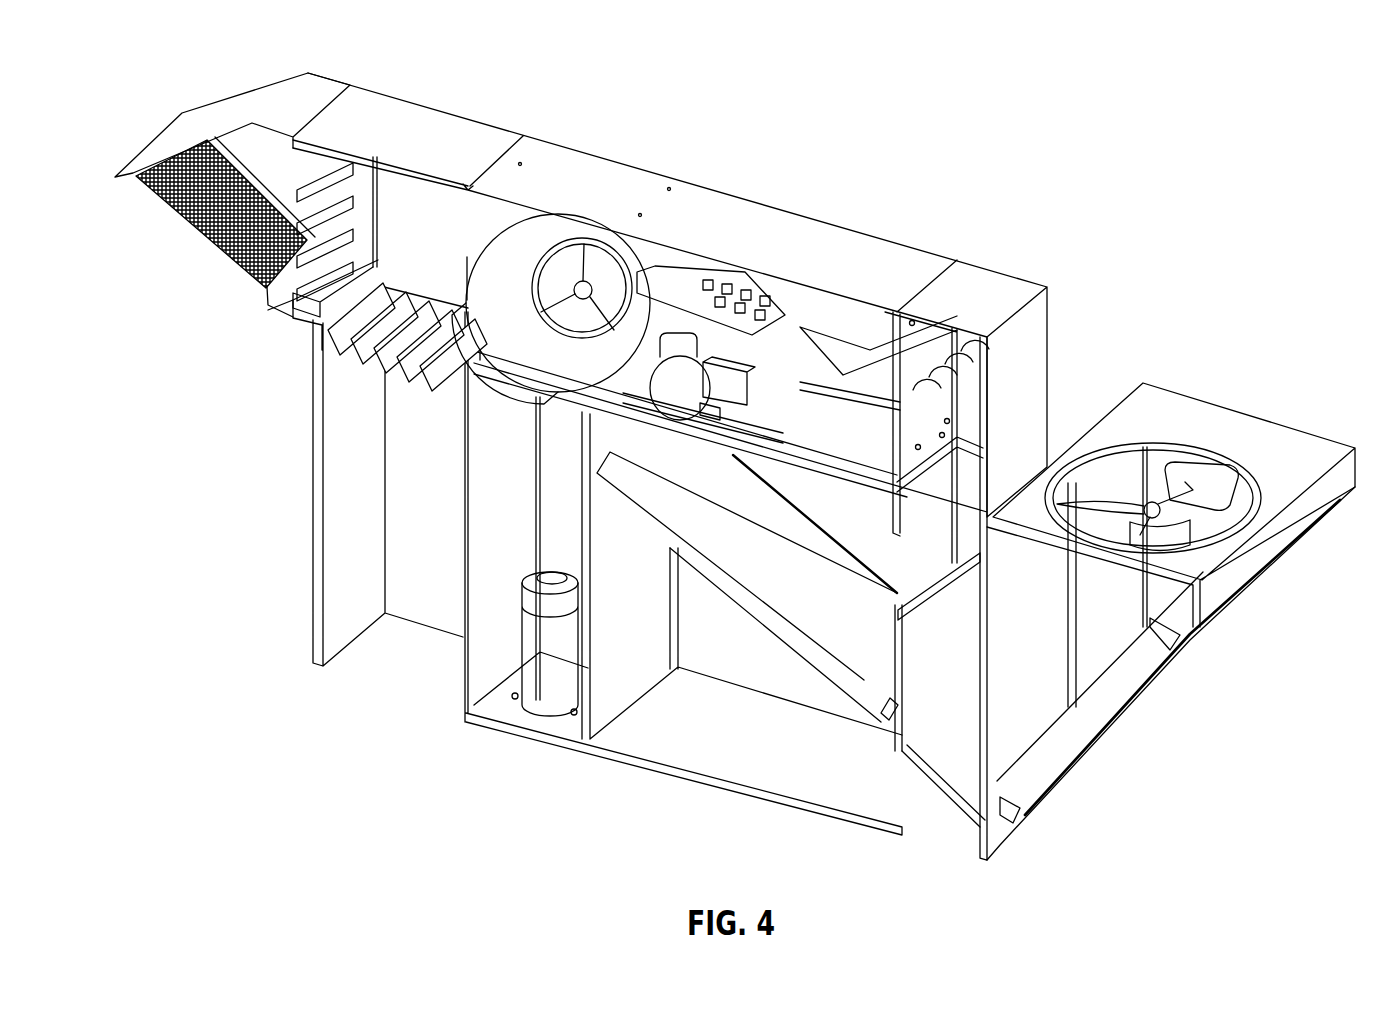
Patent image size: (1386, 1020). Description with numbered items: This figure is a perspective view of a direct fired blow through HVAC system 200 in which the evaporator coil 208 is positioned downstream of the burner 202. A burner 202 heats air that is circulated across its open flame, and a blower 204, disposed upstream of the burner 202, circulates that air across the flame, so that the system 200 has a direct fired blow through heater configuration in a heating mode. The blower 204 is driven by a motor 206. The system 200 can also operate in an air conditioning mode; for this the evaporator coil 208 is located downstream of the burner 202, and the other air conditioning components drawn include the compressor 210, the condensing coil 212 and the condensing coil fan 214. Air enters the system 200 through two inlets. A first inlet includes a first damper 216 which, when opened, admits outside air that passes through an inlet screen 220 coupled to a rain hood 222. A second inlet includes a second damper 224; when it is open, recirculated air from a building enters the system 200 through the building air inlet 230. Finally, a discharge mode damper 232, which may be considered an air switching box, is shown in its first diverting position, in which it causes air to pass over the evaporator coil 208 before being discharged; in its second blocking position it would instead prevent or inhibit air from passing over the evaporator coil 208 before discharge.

The direct fired blow through HVAC system 200 is at (1247, 108).
The burner 202 is at (688, 268).
The blower 204 is at (583, 293).
The motor 206 is at (683, 384).
The evaporator coil 208 is at (765, 545).
The compressor 210 is at (545, 655).
The condensing coil 212 is at (1090, 722).
The condensing coil fan 214 is at (1212, 490).
The first damper 216 is at (340, 220).
The inlet screen 220 is at (235, 222).
The rain hood 222 is at (225, 115).
The second damper 224 is at (398, 335).
The building air inlet 230 is at (400, 660).
The discharge mode damper 232 is at (968, 569).